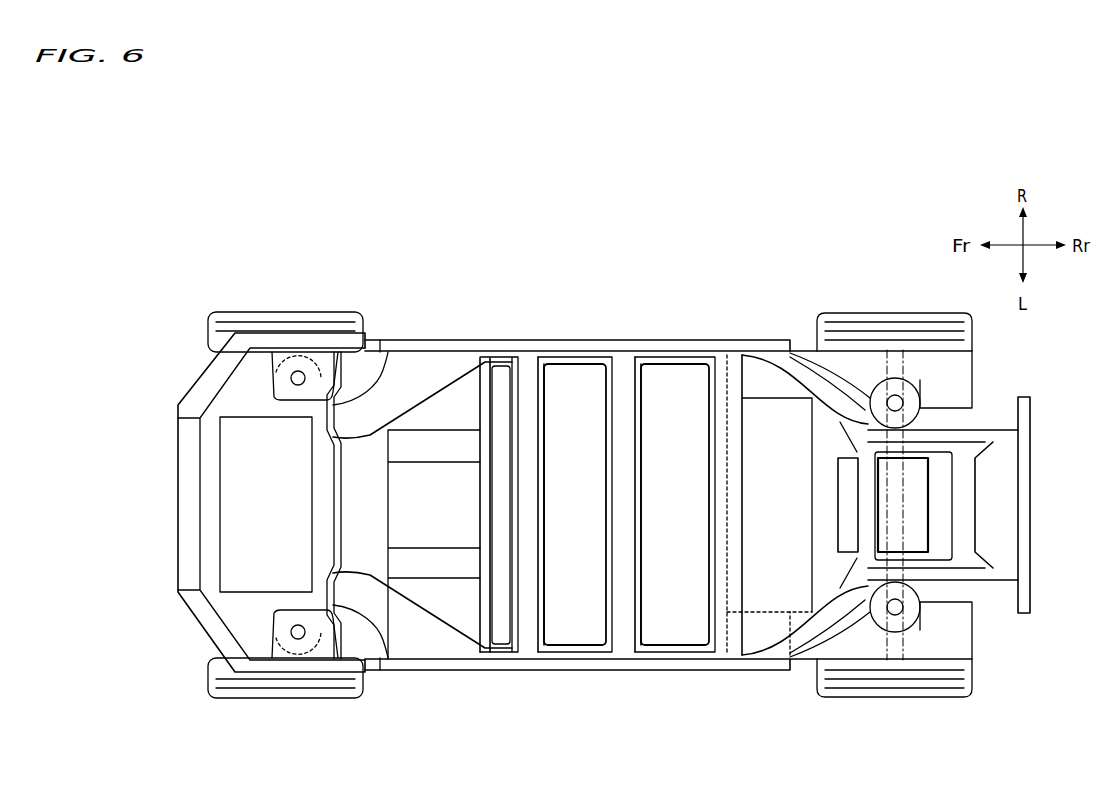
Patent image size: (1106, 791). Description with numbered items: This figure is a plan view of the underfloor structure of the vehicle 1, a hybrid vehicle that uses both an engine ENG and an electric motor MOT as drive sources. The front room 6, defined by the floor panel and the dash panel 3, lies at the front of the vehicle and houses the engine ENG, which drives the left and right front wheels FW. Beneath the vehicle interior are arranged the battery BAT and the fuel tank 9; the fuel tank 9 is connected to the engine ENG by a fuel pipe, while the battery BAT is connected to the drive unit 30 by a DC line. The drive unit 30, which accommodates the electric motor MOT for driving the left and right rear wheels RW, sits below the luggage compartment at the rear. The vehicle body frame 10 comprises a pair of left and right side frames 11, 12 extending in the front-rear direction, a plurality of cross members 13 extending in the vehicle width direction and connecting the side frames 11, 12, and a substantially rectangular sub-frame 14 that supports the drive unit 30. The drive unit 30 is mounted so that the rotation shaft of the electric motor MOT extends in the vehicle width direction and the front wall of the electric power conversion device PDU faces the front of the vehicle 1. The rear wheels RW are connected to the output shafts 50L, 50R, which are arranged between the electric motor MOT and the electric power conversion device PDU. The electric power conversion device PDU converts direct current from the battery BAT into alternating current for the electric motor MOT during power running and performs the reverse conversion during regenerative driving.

The vehicle 1 is at (611, 309).
The dash panel 3 is at (372, 440).
The front room 6 is at (254, 618).
The fuel tank 9 is at (788, 657).
The vehicle body frame 10 is at (698, 340).
The side frame 11 is at (648, 342).
The side frame 12 is at (673, 672).
The cross member 13 is at (367, 457).
The sub-frame 14 is at (935, 434).
The drive unit 30 is at (933, 504).
The engine ENG is at (265, 417).
The front wheel FW is at (306, 312).
The rear wheel RW is at (922, 313).
The battery BAT is at (505, 425).
The electric motor MOT is at (918, 516).
The electric power conversion device PDU is at (848, 552).
The output shaft 50R is at (915, 400).
The output shaft 50L is at (925, 632).